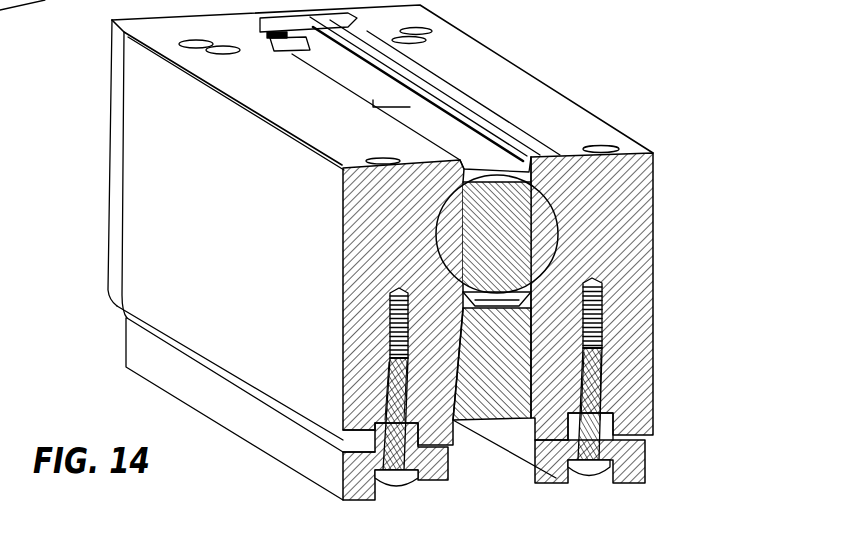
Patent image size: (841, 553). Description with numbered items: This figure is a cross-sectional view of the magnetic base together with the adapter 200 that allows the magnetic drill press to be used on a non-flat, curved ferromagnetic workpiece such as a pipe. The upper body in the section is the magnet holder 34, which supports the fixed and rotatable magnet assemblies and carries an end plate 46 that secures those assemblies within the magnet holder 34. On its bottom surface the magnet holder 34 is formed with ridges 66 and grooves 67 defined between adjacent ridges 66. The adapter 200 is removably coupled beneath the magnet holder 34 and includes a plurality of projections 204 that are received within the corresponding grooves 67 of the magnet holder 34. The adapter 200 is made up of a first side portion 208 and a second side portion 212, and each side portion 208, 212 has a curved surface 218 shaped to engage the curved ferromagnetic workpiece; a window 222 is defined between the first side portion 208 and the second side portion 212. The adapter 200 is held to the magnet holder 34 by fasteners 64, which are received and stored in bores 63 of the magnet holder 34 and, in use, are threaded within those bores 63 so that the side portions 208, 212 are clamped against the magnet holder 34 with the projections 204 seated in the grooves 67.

The adapter 200 is at (87, 355).
The end plate 46 is at (118, 180).
The magnet holder 34 is at (158, 227).
The second side portion 212 is at (314, 499).
The first side portion 208 is at (656, 470).
The ridges 66 is at (352, 450).
The window 222 is at (510, 484).
The projections 204 is at (375, 428).
The curved surface 218 is at (434, 488).
The bores 63 is at (390, 312).
The fasteners 64 is at (390, 370).
The grooves 67 is at (387, 390).